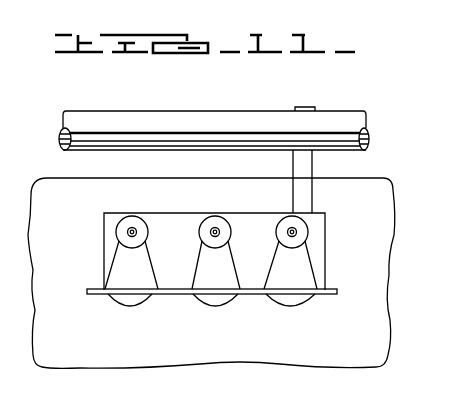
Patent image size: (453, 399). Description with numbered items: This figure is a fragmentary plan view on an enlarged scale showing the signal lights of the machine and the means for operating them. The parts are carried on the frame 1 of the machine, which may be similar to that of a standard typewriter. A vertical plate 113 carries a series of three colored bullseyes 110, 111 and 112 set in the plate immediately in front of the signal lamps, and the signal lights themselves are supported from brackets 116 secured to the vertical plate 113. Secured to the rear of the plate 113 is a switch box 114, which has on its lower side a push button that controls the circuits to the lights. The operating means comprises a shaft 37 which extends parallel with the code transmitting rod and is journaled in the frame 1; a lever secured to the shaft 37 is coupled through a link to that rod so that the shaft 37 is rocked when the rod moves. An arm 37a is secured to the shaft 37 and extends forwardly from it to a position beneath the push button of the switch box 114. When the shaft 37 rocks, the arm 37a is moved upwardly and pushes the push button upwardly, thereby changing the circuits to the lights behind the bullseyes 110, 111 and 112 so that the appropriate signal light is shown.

The frame 1 is at (373, 273).
The shaft 37 is at (328, 118).
The arm 37a is at (304, 172).
The colored bullseye 110 is at (142, 300).
The colored bullseye 111 is at (223, 298).
The colored bullseye 112 is at (302, 297).
The vertical plate 113 is at (177, 293).
The switch box 114 is at (315, 233).
The brackets 116 is at (283, 260).